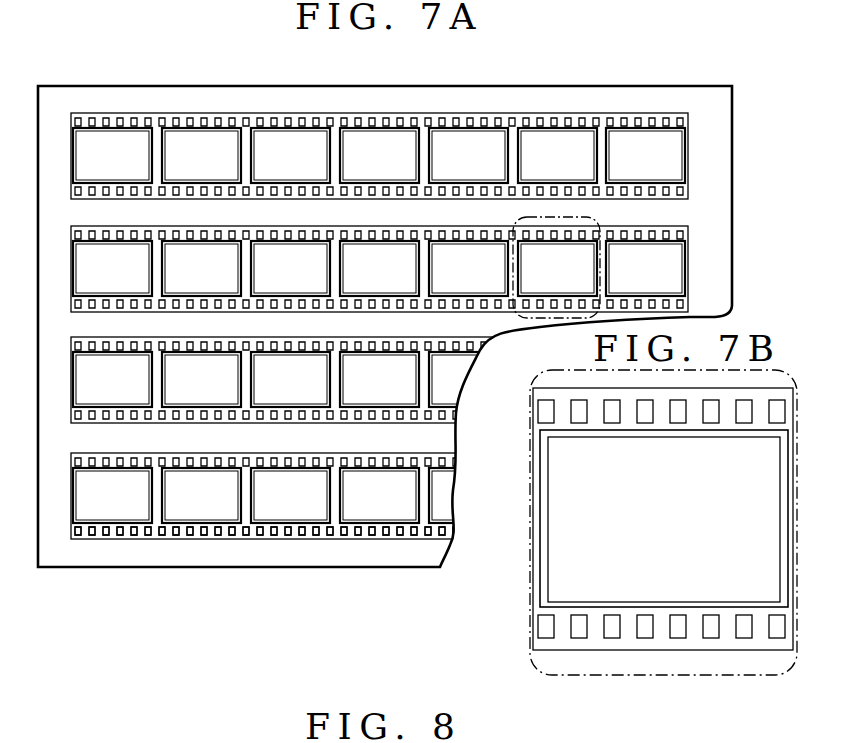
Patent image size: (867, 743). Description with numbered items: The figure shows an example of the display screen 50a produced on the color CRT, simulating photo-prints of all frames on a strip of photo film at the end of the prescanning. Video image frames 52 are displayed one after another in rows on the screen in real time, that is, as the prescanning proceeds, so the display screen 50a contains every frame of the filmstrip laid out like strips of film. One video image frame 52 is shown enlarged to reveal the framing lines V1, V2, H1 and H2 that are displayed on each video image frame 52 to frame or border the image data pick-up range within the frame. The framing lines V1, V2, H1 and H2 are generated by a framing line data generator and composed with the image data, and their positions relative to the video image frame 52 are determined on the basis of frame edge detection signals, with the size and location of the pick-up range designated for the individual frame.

In FIG. 7A, the display screen 50a is at (368, 567).
In FIG. 7A, the video image frame 52 is at (284, 540).
In FIG. 7B, the video image frame 52 is at (730, 640).
In FIG. 7B, the framing line V1 is at (547, 503).
In FIG. 7B, the framing line V2 is at (778, 510).
In FIG. 7B, the framing line H1 is at (657, 437).
In FIG. 7B, the framing line H2 is at (660, 602).